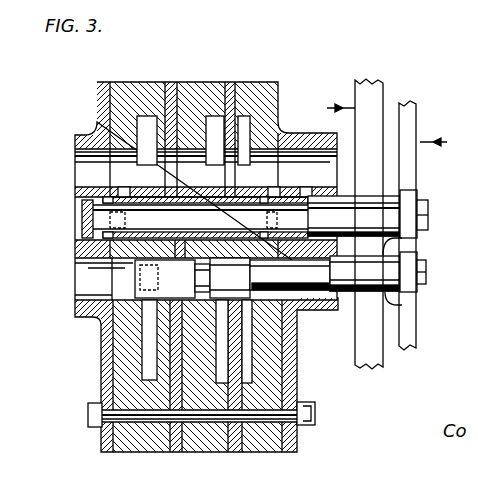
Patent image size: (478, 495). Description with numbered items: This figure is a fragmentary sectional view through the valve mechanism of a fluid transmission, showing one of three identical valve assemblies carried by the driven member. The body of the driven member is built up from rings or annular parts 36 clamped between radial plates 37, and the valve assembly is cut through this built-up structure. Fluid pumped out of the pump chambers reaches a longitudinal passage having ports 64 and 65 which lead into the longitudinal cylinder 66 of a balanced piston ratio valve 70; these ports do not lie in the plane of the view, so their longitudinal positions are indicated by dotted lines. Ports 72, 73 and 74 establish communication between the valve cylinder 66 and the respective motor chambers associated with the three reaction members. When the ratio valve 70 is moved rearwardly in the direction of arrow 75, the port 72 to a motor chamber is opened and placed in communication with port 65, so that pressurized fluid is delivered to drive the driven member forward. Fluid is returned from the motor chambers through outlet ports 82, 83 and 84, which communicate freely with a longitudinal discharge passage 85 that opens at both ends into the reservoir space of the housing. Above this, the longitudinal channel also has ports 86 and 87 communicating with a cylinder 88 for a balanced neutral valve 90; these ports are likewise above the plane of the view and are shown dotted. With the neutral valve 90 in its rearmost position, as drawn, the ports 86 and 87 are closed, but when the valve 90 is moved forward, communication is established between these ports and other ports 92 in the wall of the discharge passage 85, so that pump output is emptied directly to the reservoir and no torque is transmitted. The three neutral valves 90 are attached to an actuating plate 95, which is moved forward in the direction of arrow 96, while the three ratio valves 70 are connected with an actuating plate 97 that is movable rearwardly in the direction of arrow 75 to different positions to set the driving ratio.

The annular parts 36 is at (149, 452).
The radial plates 37 is at (103, 447).
The port 64 is at (164, 268).
The port 65 is at (304, 305).
The longitudinal cylinder 66 is at (100, 287).
The ratio valve 70 is at (380, 276).
The port 72 is at (245, 342).
The port 73 is at (225, 362).
The port 74 is at (148, 352).
The arrow 75 is at (346, 107).
The outlet port 82 is at (249, 116).
The outlet port 83 is at (215, 116).
The outlet port 84 is at (148, 116).
The longitudinal discharge passage 85 is at (87, 165).
The port 86 is at (122, 194).
The port 87 is at (272, 196).
The cylinder 88 is at (80, 213).
The neutral valve 90 is at (377, 216).
The ports 92 is at (305, 195).
The actuating plate 95 is at (413, 168).
The arrow 96 is at (446, 136).
The actuating plate 97 is at (381, 95).